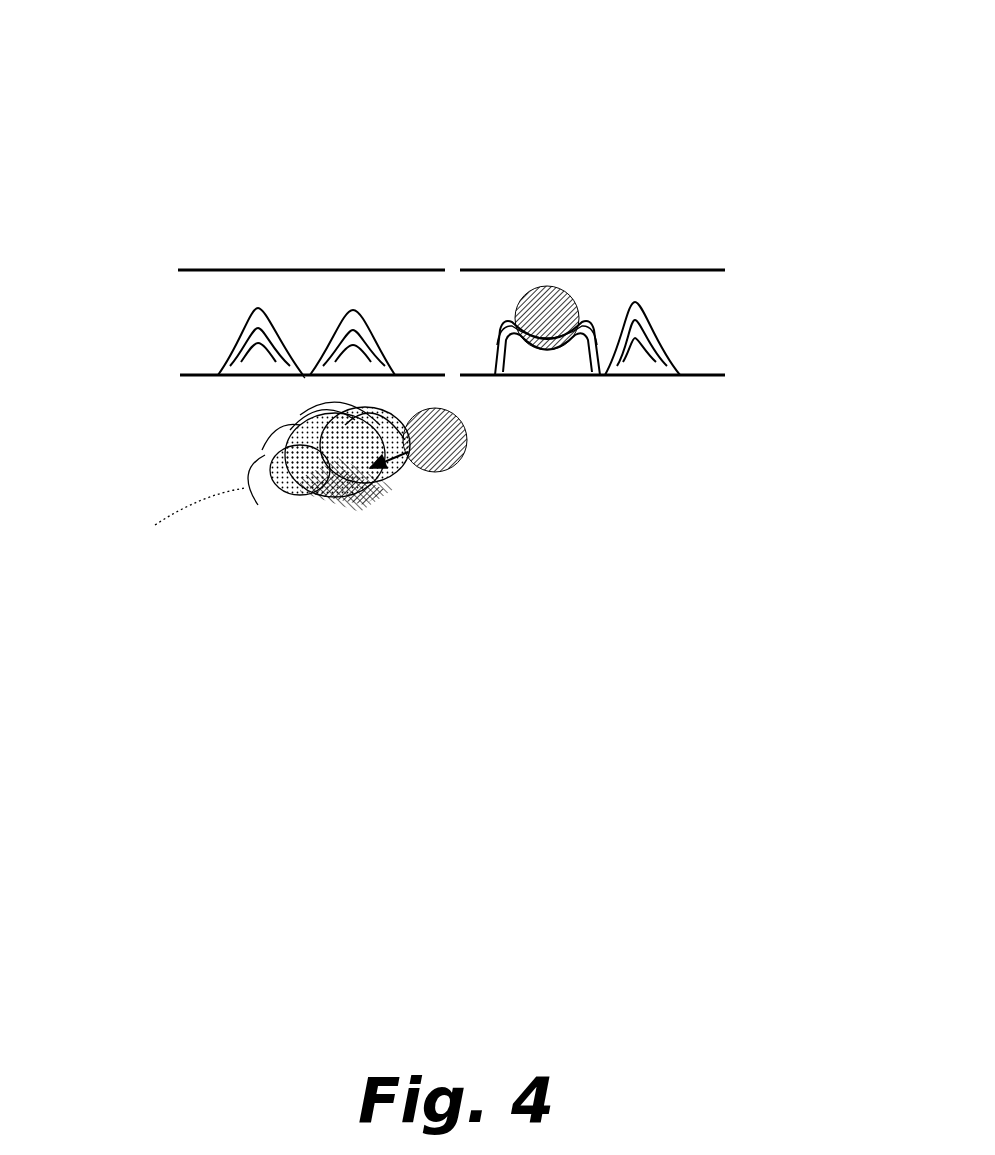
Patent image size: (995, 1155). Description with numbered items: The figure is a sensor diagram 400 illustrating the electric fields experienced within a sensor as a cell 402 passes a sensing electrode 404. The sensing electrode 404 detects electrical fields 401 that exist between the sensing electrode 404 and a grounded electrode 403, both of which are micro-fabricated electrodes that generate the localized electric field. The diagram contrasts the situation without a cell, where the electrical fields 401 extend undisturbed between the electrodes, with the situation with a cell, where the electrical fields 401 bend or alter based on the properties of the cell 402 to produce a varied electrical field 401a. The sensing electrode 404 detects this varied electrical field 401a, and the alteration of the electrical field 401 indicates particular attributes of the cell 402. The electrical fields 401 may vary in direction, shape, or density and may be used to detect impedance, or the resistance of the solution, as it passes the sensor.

The sensor diagram 400 is at (205, 108).
The electrical fields 401 is at (335, 318).
The varied electrical field 401a is at (590, 322).
The cell 402 is at (547, 318).
The grounded electrode 403 is at (305, 376).
The sensing electrode 404 is at (305, 377).